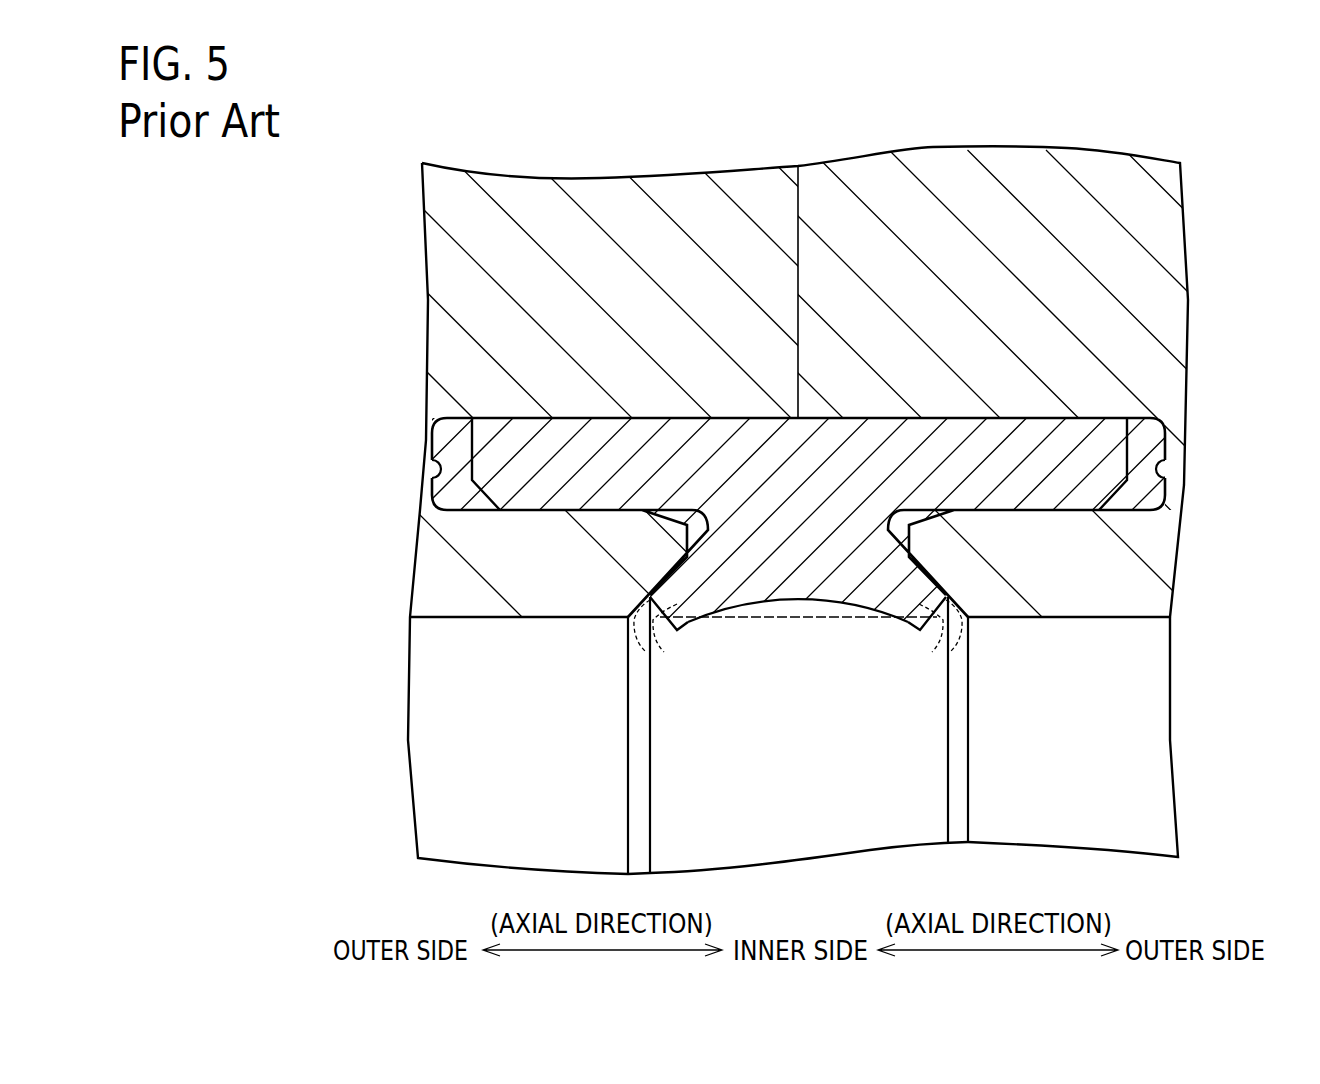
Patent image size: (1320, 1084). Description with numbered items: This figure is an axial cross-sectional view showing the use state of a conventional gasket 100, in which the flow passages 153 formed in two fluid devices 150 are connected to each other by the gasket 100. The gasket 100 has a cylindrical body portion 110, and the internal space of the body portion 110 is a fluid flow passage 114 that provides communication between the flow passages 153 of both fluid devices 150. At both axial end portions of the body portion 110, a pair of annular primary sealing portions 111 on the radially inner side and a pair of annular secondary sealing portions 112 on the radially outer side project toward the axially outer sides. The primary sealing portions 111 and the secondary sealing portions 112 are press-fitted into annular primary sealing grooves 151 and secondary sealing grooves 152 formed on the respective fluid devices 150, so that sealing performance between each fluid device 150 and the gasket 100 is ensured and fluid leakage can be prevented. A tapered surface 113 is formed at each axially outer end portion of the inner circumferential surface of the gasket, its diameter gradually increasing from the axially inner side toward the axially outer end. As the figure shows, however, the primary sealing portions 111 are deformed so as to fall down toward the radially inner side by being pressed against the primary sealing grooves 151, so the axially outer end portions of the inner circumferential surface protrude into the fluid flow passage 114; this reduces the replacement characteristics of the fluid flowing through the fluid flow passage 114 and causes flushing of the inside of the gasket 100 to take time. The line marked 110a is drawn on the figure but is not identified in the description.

The gasket 100 is at (650, 418).
The body portion 110 is at (767, 585).
The sealing surface reference line 110a is at (832, 605).
The primary sealing portion 111 is at (672, 600).
The secondary sealing portion 112 is at (503, 432).
The tapered surface 113 is at (650, 640).
The fluid flow passage 114 is at (822, 788).
The fluid device 150 is at (470, 266).
The primary sealing groove 151 is at (637, 637).
The secondary sealing groove 152 is at (432, 462).
The flow passage 153 is at (548, 788).